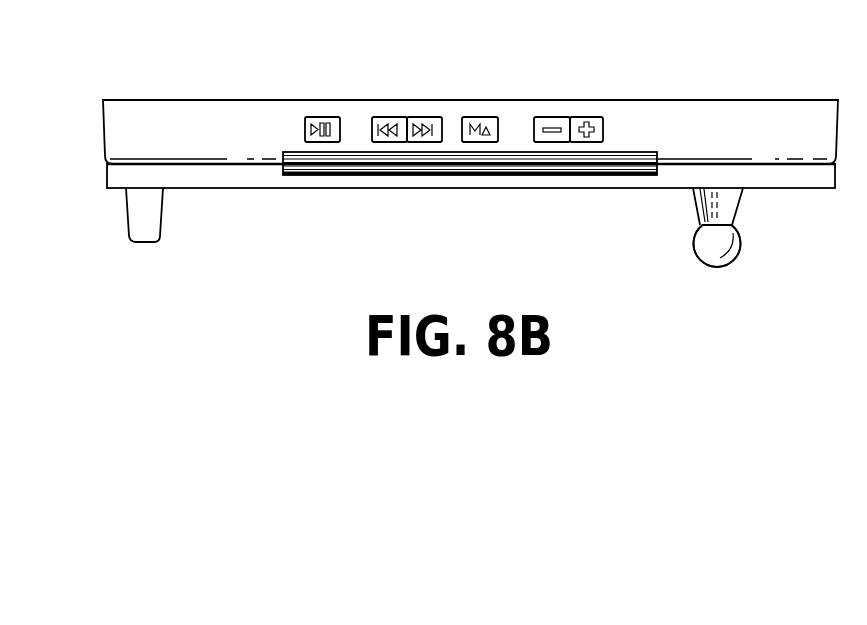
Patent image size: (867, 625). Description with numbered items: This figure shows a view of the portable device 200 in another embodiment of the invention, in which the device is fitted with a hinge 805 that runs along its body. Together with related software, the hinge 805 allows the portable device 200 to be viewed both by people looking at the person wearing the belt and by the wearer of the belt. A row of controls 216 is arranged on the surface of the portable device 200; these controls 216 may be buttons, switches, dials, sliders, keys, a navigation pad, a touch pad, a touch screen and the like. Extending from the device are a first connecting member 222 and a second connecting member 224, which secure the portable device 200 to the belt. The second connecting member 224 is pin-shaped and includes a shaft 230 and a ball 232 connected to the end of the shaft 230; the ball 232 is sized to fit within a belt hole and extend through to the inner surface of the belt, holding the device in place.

The portable device 200 is at (103, 122).
The controls 216 is at (547, 117).
The first connecting member 222 is at (127, 228).
The second connecting member 224 is at (727, 265).
The shaft 230 is at (728, 203).
The ball 232 is at (697, 245).
The hinge 805 is at (453, 175).